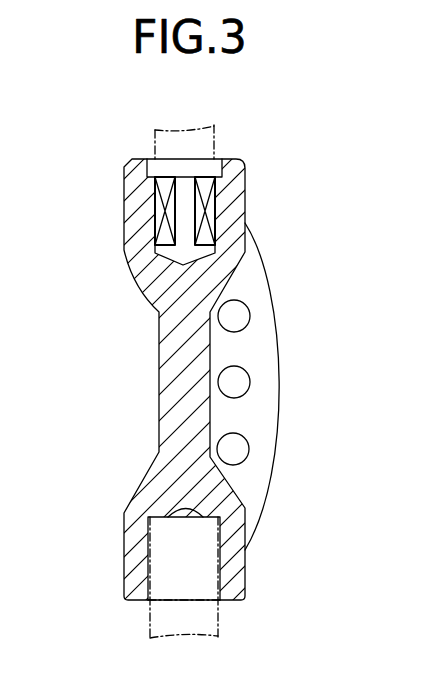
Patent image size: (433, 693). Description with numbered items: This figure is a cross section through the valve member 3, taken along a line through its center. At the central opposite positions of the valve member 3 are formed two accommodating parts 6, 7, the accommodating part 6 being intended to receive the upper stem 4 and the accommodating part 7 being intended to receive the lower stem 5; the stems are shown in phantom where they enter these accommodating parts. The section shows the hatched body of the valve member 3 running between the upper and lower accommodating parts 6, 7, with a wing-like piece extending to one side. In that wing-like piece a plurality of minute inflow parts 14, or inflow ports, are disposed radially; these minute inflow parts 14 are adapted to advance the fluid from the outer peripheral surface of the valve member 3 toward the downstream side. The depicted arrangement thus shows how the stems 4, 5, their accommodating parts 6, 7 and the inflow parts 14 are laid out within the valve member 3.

The valve member 3 is at (158, 342).
The upper stem 4 is at (197, 145).
The lower stem 5 is at (207, 624).
The accommodating part 6 is at (243, 201).
The accommodating part 7 is at (245, 577).
The minute inflow part (inflow port) 14 is at (237, 380).